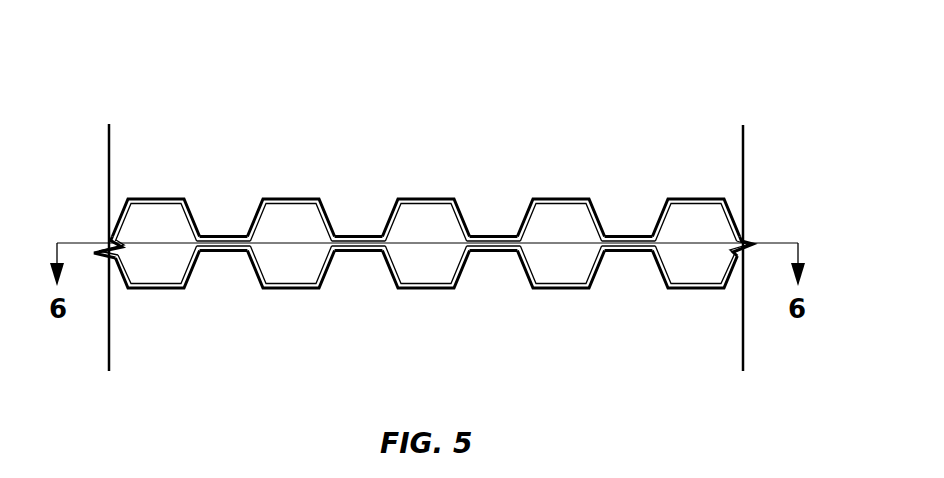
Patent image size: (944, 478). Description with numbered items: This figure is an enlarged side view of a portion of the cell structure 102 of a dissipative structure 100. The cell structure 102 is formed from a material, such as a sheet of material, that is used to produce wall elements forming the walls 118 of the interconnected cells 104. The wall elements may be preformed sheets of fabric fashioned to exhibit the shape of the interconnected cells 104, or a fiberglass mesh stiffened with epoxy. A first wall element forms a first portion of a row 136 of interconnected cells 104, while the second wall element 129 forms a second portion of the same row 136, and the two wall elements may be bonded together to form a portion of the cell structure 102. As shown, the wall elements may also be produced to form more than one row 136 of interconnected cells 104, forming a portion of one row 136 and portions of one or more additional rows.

The dissipative structure 100 is at (177, 53).
The cell structure 102 is at (428, 199).
The interconnected cells 104 is at (535, 268).
The walls 118 is at (600, 212).
The second wall element 129 is at (253, 268).
The row 136 is at (757, 222).